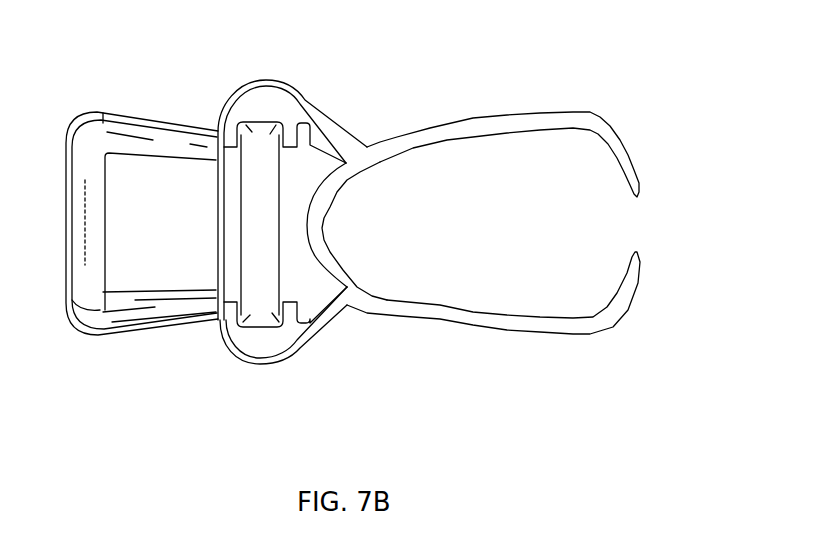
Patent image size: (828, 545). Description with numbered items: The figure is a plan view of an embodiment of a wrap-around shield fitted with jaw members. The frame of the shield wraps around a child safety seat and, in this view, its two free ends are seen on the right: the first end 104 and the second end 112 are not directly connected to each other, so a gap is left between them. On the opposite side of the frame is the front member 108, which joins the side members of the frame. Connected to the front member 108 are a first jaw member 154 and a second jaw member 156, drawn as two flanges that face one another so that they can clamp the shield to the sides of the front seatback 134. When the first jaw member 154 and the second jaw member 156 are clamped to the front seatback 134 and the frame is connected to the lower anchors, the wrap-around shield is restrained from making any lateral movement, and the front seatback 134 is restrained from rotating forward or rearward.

The first end 104 is at (617, 152).
The front member 108 is at (322, 215).
The second end 112 is at (617, 300).
The front seatback 134 is at (260, 238).
The first jaw member 154 is at (303, 115).
The second jaw member 156 is at (278, 333).